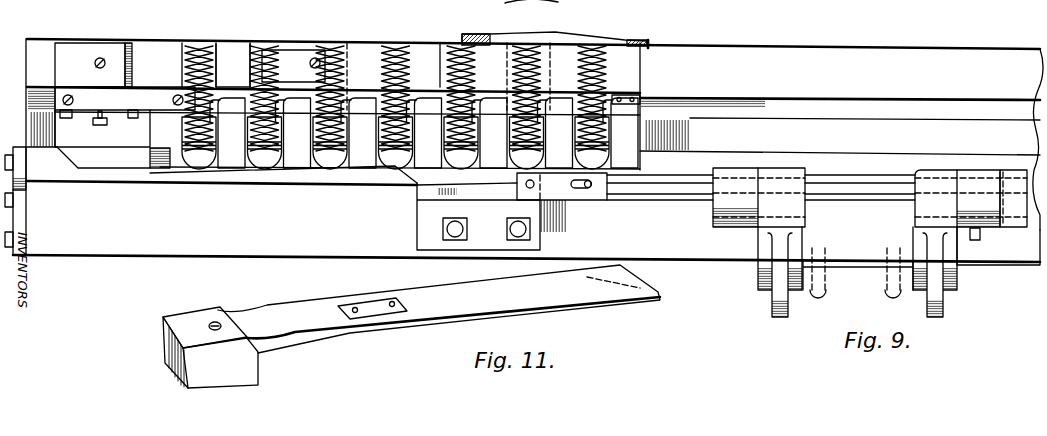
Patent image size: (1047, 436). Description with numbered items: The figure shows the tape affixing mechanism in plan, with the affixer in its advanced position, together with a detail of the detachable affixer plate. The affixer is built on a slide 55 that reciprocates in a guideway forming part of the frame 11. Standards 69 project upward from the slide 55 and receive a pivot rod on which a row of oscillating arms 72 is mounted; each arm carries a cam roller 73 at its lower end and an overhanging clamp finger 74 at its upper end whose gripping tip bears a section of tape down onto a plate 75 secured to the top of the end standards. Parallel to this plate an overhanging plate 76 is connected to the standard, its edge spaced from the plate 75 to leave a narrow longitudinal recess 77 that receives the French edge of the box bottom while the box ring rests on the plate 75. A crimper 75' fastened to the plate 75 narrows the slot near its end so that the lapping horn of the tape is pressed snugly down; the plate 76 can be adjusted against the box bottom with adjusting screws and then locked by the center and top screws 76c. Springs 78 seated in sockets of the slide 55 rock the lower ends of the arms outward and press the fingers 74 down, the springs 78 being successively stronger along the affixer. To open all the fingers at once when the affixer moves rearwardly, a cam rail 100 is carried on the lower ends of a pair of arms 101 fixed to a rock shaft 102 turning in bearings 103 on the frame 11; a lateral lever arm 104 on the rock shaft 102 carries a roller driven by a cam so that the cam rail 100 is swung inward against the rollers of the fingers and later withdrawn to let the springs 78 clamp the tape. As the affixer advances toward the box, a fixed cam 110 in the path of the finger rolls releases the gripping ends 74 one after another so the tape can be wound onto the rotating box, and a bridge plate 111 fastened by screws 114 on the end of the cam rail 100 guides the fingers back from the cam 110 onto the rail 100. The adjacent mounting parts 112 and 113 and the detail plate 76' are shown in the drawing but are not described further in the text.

In FIG. 9, the frame 11 is at (133, 243).
In FIG. 9, the slide 55 is at (45, 113).
In FIG. 9, the standards 69 is at (228, 168).
In FIG. 9, the oscillating arms 72 is at (273, 163).
In FIG. 9, the cam rollers 73 is at (330, 170).
In FIG. 9, the clamp fingers 74 is at (420, 130).
In FIG. 9, the plate 75 is at (125, 98).
In FIG. 9, the crimper 75' is at (661, 87).
In FIG. 9, the overhanging plate 76 is at (422, 48).
In FIG. 11, the overhanging plate 76 is at (411, 325).
In FIG. 9, the key plate 76' is at (296, 46).
In FIG. 11, the key plate 76' is at (372, 292).
In FIG. 9, the locking screws 76c is at (103, 126).
In FIG. 9, the longitudinal recess 77 is at (365, 90).
In FIG. 9, the springs 78 is at (200, 46).
In FIG. 9, the cam rail 100 is at (700, 186).
In FIG. 9, the arms 101 is at (743, 205).
In FIG. 9, the rock shaft 102 is at (945, 172).
In FIG. 9, the bearings 103 is at (762, 268).
In FIG. 9, the lever arm 104 is at (1037, 237).
In FIG. 9, the fixed cam 110 is at (272, 180).
In FIG. 9, the bridge plate 111 is at (553, 190).
In FIG. 9, the plate 112 is at (541, 196).
In FIG. 9, the box 113 is at (417, 212).
In FIG. 9, the screws 114 is at (594, 188).